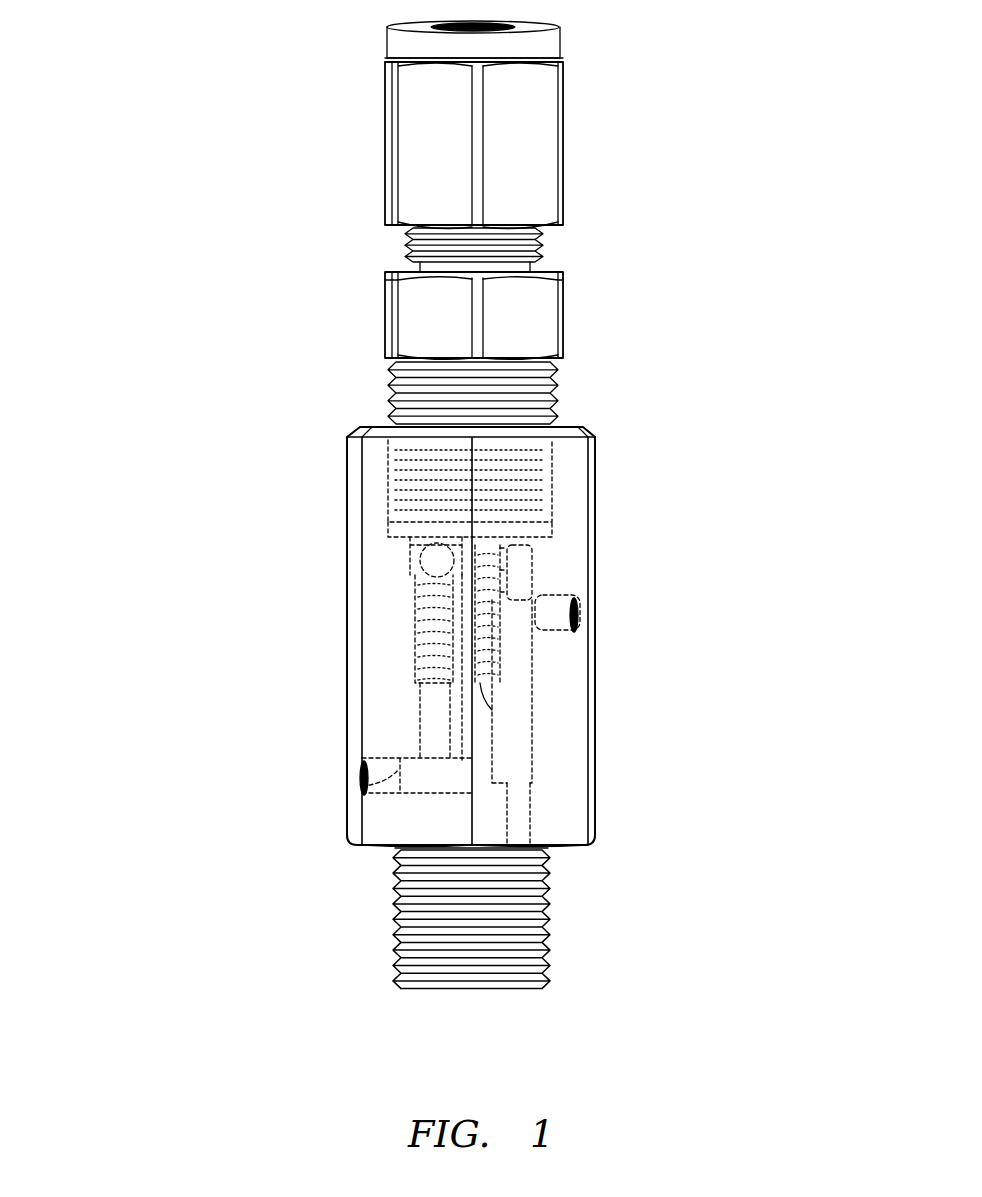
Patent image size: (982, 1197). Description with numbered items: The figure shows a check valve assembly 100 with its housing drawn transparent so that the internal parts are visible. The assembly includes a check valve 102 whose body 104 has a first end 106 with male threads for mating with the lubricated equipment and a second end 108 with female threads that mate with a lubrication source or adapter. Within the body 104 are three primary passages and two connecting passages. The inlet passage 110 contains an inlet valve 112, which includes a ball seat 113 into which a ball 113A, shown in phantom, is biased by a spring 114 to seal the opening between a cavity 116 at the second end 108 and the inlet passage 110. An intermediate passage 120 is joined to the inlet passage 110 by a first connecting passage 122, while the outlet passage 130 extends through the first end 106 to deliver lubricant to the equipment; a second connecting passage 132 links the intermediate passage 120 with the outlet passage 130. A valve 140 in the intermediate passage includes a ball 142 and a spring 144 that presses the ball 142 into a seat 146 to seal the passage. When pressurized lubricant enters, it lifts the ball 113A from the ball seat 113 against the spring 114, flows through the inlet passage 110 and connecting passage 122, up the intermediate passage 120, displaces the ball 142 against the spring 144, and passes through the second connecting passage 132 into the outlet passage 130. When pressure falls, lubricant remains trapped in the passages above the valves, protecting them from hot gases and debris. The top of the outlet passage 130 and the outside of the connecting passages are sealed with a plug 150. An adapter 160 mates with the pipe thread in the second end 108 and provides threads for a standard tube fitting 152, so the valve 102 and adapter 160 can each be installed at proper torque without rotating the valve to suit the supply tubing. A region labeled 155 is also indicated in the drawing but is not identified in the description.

The check valve assembly 100 is at (190, 99).
The check valve 102 is at (262, 384).
The body 104 is at (347, 468).
The first end 106 is at (548, 880).
The second end 108 is at (548, 476).
The inlet passage 110 is at (420, 710).
The inlet valve 112 is at (395, 548).
The ball seat 113 is at (420, 565).
The ball 113A is at (380, 549).
The spring 114 is at (415, 600).
The cavity 116 is at (545, 533).
The intermediate passage 120 is at (537, 757).
The first connecting passage 122 is at (417, 793).
The outlet passage 130 is at (500, 757).
The second connecting passage 132 is at (560, 585).
The valve 140 is at (522, 677).
The ball 142 is at (500, 683).
The spring 144 is at (493, 662).
The seat 146 is at (480, 683).
The plug 150 is at (545, 596).
The tube fitting 152 is at (566, 110).
The chamber 155 is at (532, 550).
The adapter 160 is at (566, 310).